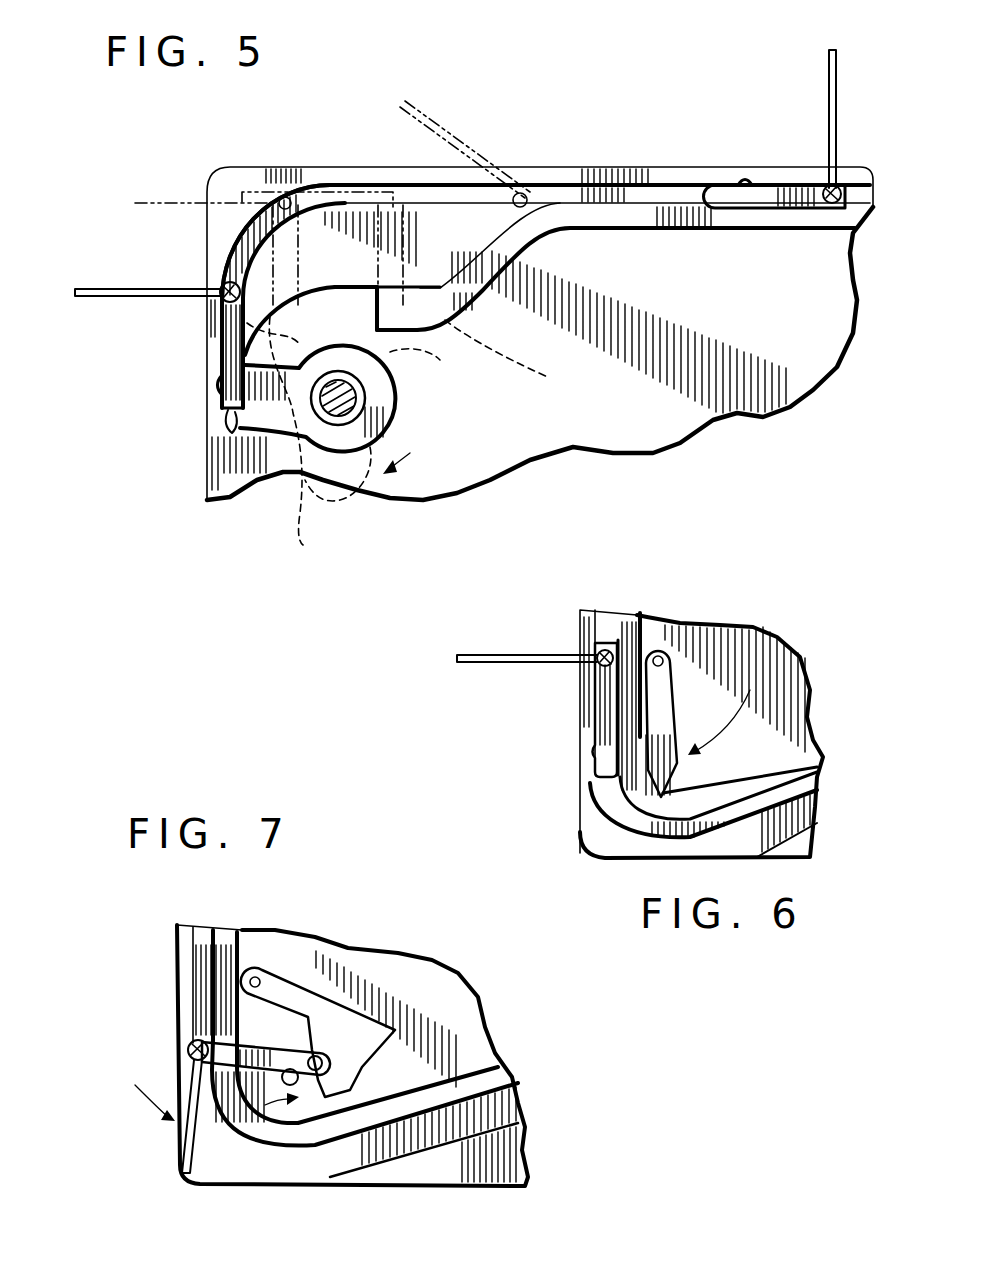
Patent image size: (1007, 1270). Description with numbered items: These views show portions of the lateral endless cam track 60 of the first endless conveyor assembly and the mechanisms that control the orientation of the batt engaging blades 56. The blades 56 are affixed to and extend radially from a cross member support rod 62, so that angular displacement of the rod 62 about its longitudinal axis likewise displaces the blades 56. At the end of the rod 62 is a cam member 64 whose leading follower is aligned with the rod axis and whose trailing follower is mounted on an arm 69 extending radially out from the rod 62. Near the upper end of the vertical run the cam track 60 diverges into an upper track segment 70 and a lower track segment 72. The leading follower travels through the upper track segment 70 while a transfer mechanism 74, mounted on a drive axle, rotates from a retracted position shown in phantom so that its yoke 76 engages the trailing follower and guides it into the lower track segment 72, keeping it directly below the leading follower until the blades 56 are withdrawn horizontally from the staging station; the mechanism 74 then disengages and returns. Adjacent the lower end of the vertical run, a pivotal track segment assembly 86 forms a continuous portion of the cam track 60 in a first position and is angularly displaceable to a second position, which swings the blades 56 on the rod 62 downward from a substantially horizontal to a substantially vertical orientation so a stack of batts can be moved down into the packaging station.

In FIG. 5, the batt engaging blades 56 is at (155, 298).
In FIG. 6, the batt engaging blades 56 is at (490, 655).
In FIG. 7, the batt engaging blades 56 is at (180, 1142).
In FIG. 5, the lateral endless cam track 60 is at (598, 182).
In FIG. 6, the lateral endless cam track 60 is at (608, 628).
In FIG. 7, the lateral endless cam track 60 is at (208, 952).
In FIG. 5, the cross member support rod 62 is at (225, 300).
In FIG. 6, the cross member support rod 62 is at (602, 664).
In FIG. 7, the cross member support rod 62 is at (198, 1037).
In FIG. 6, the cam member 64 is at (580, 717).
In FIG. 7, the cam member 64 is at (267, 1024).
In FIG. 5, the arm 69 is at (228, 365).
In FIG. 5, the upper track segment 70 is at (240, 250).
In FIG. 5, the lower track segment 72 is at (447, 322).
In FIG. 5, the transfer mechanism 74 is at (405, 429).
In FIG. 5, the yoke 76 is at (232, 430).
In FIG. 6, the pivotal track segment assembly 86 is at (697, 696).
In FIG. 7, the pivotal track segment assembly 86 is at (344, 983).